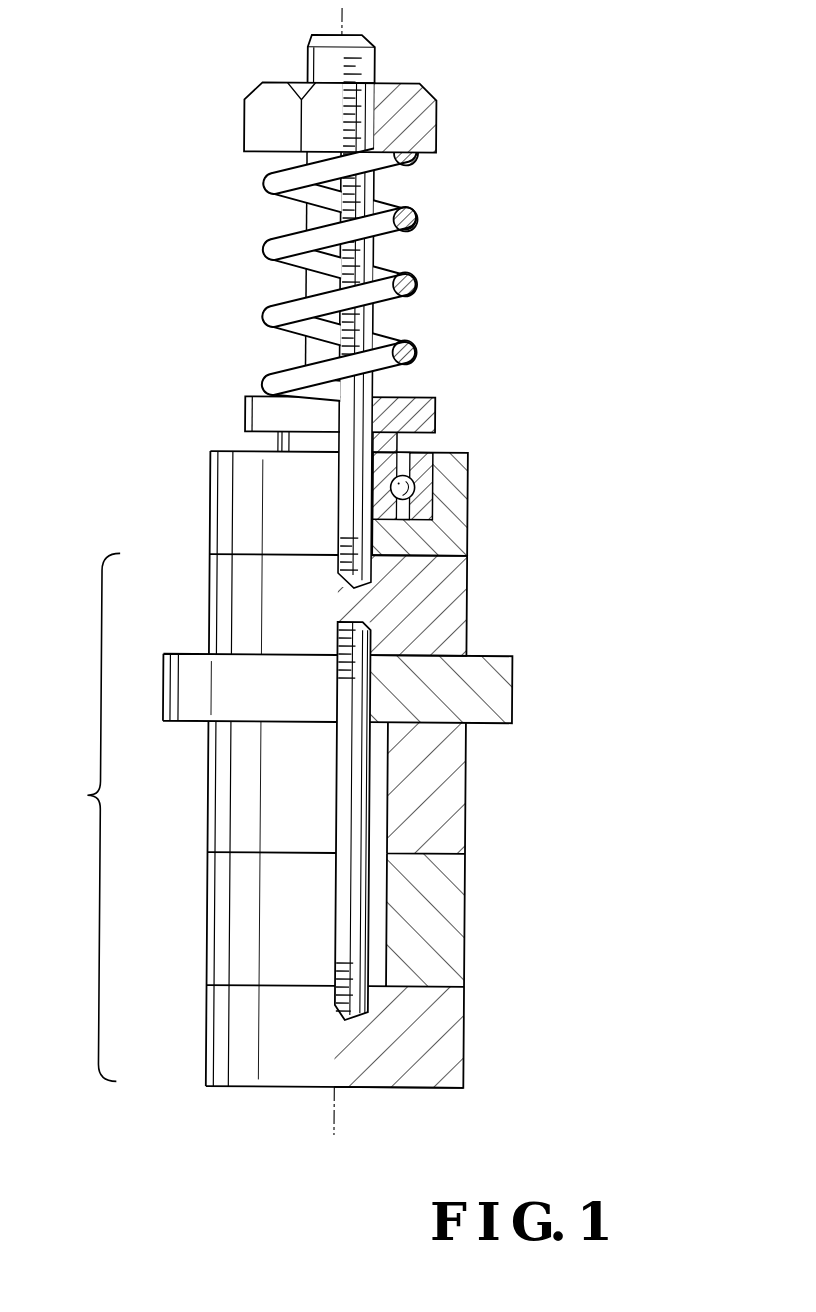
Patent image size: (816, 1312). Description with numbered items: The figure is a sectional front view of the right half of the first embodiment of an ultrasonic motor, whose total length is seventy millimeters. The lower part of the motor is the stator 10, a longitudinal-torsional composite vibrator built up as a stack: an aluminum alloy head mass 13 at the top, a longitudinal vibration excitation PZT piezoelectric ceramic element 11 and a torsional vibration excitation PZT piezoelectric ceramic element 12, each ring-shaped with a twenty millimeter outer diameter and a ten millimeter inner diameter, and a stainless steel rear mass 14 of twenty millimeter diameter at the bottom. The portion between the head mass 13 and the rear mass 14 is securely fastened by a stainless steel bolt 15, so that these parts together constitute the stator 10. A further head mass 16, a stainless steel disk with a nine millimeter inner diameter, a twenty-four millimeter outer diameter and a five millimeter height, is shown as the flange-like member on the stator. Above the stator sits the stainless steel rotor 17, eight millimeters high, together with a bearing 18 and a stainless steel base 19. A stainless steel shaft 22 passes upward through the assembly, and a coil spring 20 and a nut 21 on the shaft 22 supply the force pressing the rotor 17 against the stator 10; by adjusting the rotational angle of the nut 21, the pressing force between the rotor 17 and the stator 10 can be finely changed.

The stator 10 is at (257, 769).
The longitudinal vibration excitation PZT piezoelectric ceramic element 11 is at (449, 807).
The torsional vibration excitation PZT piezoelectric ceramic element 12 is at (444, 960).
The head mass 13 is at (439, 617).
The rear mass 14 is at (427, 1050).
The bolt 15 is at (361, 911).
The head mass 16 is at (485, 698).
The rotor 17 is at (454, 535).
The bearing 18 is at (428, 482).
The base 19 is at (416, 410).
The spring 20 is at (405, 285).
The nut 21 is at (414, 128).
The shaft 22 is at (370, 45).